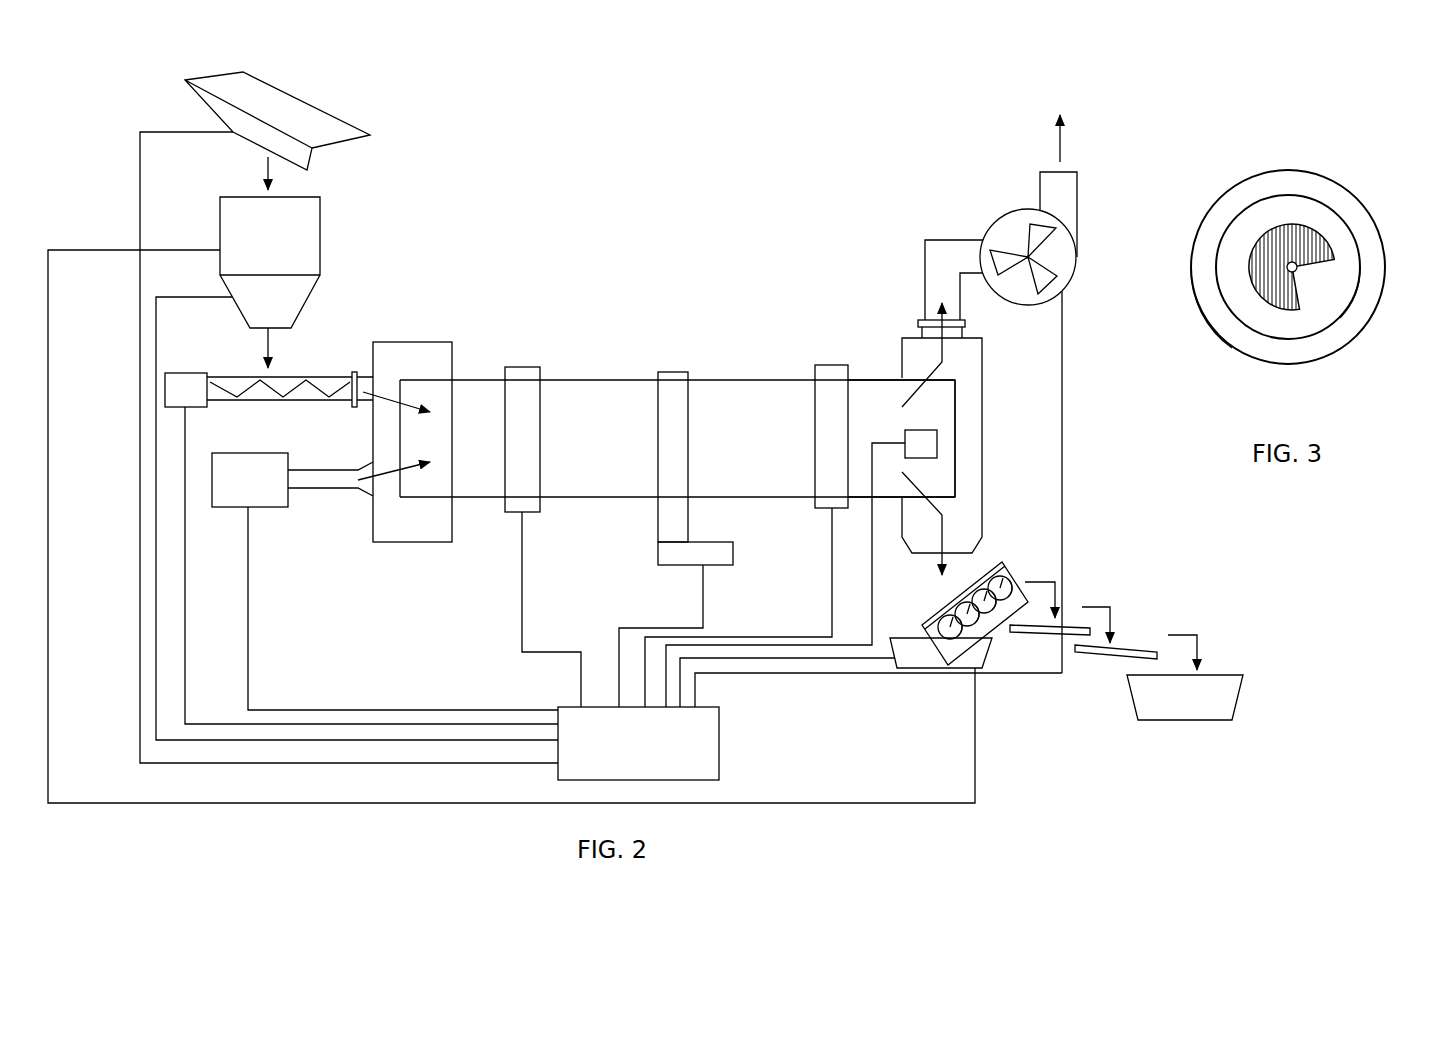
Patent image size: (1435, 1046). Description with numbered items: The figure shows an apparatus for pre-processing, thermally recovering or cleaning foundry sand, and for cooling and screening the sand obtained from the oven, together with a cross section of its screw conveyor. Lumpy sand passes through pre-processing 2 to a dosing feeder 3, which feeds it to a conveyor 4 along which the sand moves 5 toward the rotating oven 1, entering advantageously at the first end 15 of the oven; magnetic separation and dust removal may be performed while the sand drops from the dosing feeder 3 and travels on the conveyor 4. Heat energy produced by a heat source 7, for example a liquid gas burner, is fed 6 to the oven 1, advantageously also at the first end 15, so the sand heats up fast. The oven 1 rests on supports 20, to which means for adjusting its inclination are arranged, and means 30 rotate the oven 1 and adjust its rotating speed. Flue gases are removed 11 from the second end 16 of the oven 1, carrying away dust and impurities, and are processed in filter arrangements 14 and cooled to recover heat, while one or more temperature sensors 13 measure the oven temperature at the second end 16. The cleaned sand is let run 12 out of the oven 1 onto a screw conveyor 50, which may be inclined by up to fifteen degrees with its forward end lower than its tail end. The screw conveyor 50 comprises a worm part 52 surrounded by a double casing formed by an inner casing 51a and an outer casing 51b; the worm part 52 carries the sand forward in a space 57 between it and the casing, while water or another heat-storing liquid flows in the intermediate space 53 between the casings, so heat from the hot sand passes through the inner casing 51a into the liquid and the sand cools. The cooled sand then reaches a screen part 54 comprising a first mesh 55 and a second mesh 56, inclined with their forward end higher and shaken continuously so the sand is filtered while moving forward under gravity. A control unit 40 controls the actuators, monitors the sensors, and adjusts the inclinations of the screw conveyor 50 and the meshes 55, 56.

In FIG. 2, the oven 1 is at (627, 315).
In FIG. 2, the pre-processing 2 is at (284, 131).
In FIG. 2, the dosing feeder 3 is at (270, 282).
In FIG. 2, the conveyor 4 is at (225, 360).
In FIG. 2, the sand movement 5 is at (388, 402).
In FIG. 2, the heat energy feed 6 is at (380, 487).
In FIG. 2, the heat source 7 is at (292, 480).
In FIG. 2, the flue gas removal 11 is at (957, 350).
In FIG. 2, the sand discharge 12 is at (960, 561).
In FIG. 2, the temperature sensor 13 is at (921, 444).
In FIG. 2, the filter arrangement 14 is at (993, 202).
In FIG. 2, the first end of the oven 15 is at (405, 451).
In FIG. 2, the second end of the oven 16 is at (922, 421).
In FIG. 2, the supports 20 is at (522, 367).
In FIG. 2, the rotating means 30 is at (647, 543).
In FIG. 2, the control unit 40 is at (623, 758).
In FIG. 2, the screw conveyor 50 is at (937, 600).
In FIG. 3, the screw conveyor 50 is at (1223, 172).
In FIG. 2, the inner casing 51a is at (990, 633).
In FIG. 3, the inner casing 51a is at (1350, 310).
In FIG. 2, the outer casing 51b is at (990, 633).
In FIG. 3, the outer casing 51b is at (1227, 343).
In FIG. 2, the worm part 52 is at (922, 627).
In FIG. 3, the worm part 52 is at (1260, 245).
In FIG. 3, the intermediate space 53 is at (1293, 180).
In FIG. 2, the screen part 54 is at (1112, 588).
In FIG. 2, the first mesh 55 is at (1072, 626).
In FIG. 2, the second mesh 56 is at (1143, 653).
In FIG. 3, the space 57 is at (1333, 232).